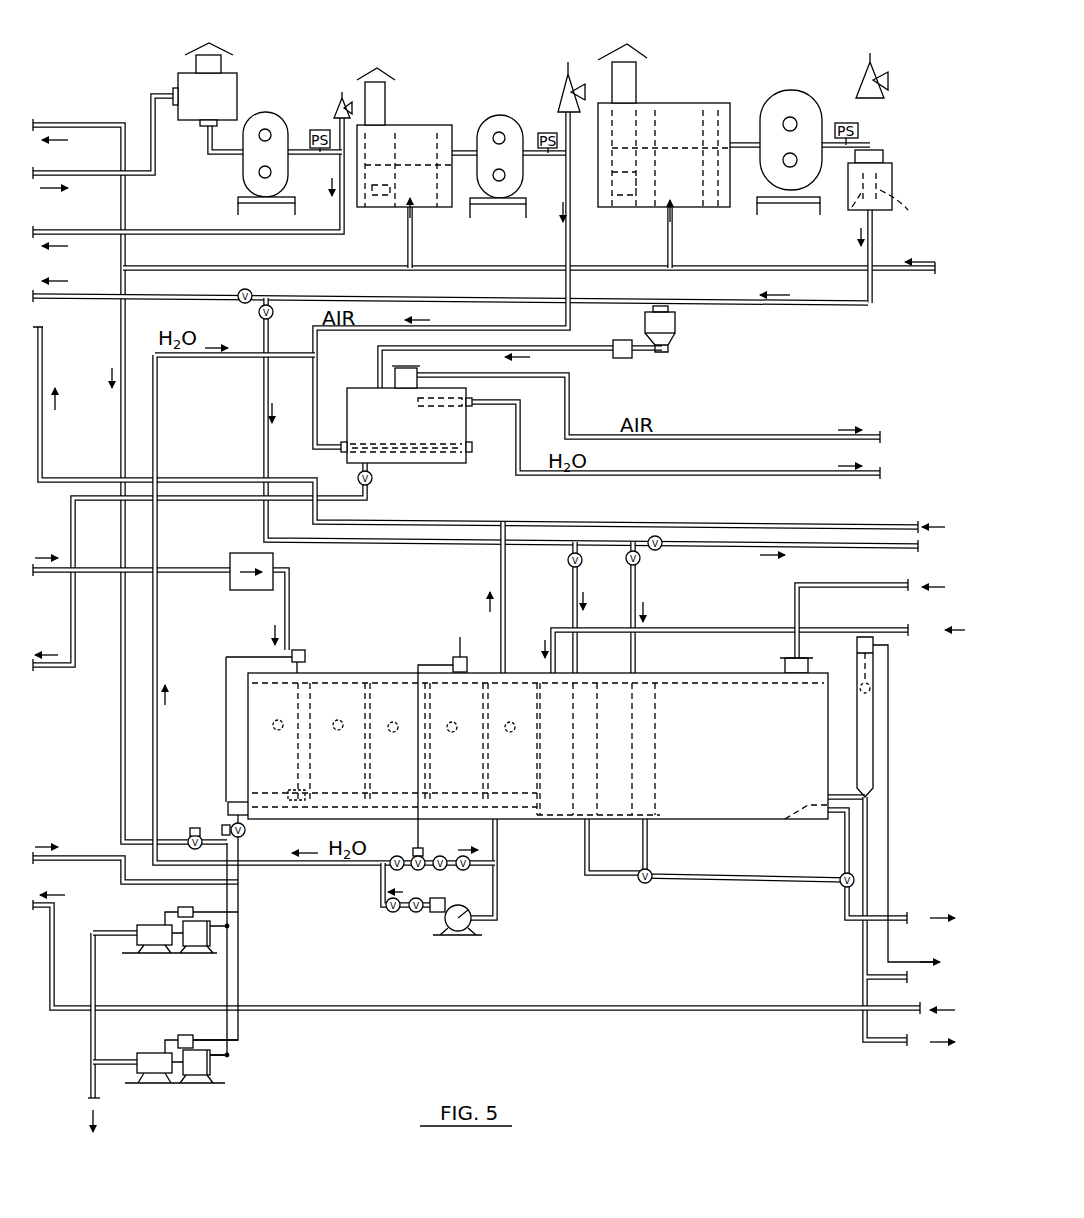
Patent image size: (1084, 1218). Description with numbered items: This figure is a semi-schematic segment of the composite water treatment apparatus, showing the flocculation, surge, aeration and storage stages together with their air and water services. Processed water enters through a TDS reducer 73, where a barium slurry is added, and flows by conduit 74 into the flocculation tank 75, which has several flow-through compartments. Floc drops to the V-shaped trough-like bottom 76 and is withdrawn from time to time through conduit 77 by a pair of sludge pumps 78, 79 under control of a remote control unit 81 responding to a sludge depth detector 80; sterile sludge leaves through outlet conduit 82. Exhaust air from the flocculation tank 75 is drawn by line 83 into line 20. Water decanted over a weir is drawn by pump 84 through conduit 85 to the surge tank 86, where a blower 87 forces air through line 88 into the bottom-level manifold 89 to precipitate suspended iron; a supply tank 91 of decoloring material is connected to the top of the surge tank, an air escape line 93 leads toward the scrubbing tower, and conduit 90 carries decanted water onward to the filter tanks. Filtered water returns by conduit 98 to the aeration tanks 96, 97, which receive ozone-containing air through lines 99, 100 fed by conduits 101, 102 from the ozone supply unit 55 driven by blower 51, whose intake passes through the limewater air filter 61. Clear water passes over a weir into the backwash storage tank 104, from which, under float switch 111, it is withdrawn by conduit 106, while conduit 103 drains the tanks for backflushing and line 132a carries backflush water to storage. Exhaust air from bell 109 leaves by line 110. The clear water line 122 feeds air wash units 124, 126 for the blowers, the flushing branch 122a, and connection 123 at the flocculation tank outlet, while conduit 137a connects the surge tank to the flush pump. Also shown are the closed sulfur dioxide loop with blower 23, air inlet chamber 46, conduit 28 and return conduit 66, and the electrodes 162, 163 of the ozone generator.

The line 20 is at (675, 520).
The blower 23 is at (266, 125).
The conduit 28 is at (222, 230).
The air inlet chamber 46 is at (205, 84).
The blower 51 is at (795, 108).
The ozone generator or supply unit 55 is at (886, 180).
The air filter 61 is at (872, 158).
The conduit 66 is at (62, 170).
The TDS reducer 73 is at (248, 553).
The conduit 74 is at (292, 600).
The flocculation tank 75 is at (538, 720).
The V-shaped trough-like bottom 76 is at (245, 800).
The conduit 77 is at (240, 970).
The sludge pump 78 is at (198, 940).
The sludge pump 79 is at (197, 1068).
The sludge depth detector 80 is at (290, 790).
The remote control unit 81 is at (302, 650).
The outlet conduit 82 is at (92, 1082).
The line 83 is at (500, 562).
The pump 84 is at (442, 924).
The conduit 85 is at (497, 832).
The surge tank 86 is at (406, 431).
The blower 87 is at (500, 125).
The line 88 is at (572, 210).
The bottom-level manifold 89 is at (410, 455).
The conduit 90 is at (522, 445).
The supply tank 91 is at (672, 330).
The air escape line 93 is at (570, 430).
The aeration tank 96 is at (560, 818).
The aeration tank 97 is at (620, 818).
The conduit 98 is at (700, 628).
The line 99 is at (570, 580).
The line 100 is at (640, 584).
The conduit 101 is at (358, 542).
The conduit 102 is at (750, 307).
The conduit 103 is at (845, 900).
The backwash storage tank 104 is at (540, 751).
The conduit 106 is at (865, 862).
The bell 109 is at (785, 666).
The line 110 is at (885, 588).
The float switch 111 is at (866, 722).
The clear water line 122 is at (70, 123).
The line 122a is at (75, 855).
The connection 123 is at (242, 870).
The air wash unit 124 is at (680, 120).
The air wash unit 126 is at (425, 135).
The line 132a is at (680, 1007).
The conduit 137a is at (205, 500).
The electrode 162 is at (856, 200).
The electrode 163 is at (908, 213).